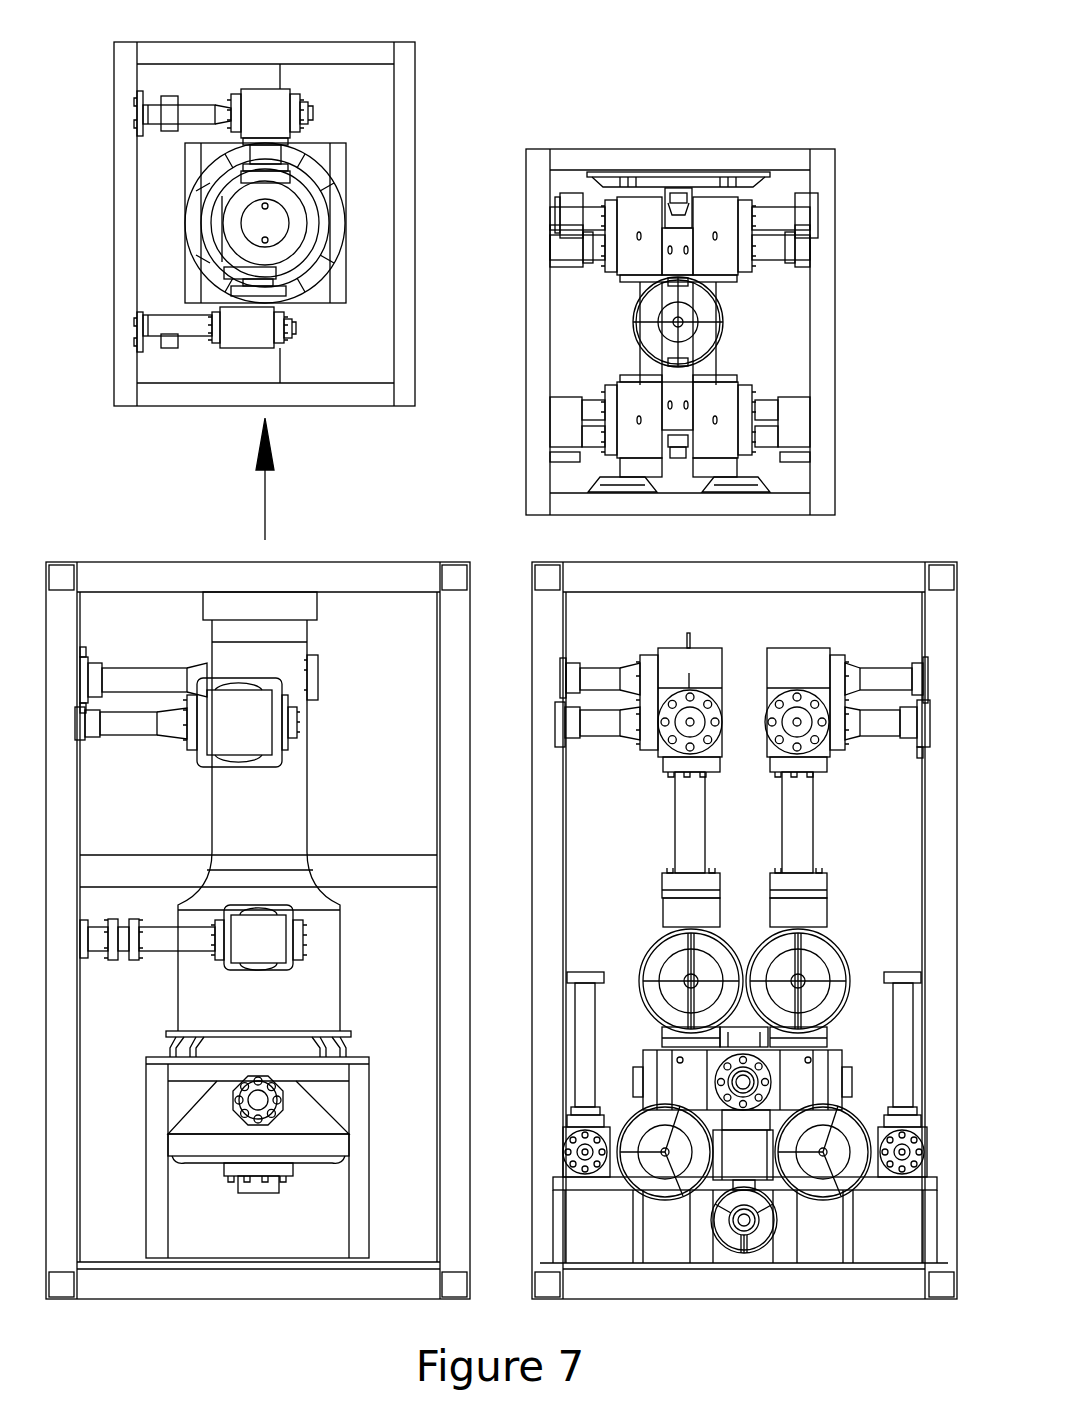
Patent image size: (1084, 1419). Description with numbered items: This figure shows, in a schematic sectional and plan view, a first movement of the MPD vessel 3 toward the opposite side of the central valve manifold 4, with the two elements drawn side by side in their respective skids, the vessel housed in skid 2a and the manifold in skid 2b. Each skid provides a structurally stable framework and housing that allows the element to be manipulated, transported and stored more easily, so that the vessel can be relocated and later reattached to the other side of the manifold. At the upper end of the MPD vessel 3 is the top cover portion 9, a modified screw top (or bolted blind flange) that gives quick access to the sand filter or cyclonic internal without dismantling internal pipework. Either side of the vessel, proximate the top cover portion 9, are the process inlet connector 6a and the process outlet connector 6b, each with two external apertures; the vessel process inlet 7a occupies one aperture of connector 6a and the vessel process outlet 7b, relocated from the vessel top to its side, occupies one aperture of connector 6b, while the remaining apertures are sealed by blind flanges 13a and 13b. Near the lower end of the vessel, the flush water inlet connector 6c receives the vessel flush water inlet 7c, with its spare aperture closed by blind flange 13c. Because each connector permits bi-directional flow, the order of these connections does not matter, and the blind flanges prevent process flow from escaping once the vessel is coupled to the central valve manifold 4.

The skid 2a is at (182, 1301).
The skid 2b is at (742, 1300).
The MPD vessel 3 is at (282, 803).
The central valve manifold 4 is at (697, 318).
The process inlet connector 6a is at (243, 334).
The process outlet connector 6b is at (265, 107).
The flush water inlet connector 6c is at (250, 949).
The vessel process inlet 7a is at (166, 322).
The vessel process outlet 7b is at (189, 111).
The vessel flush water inlet 7c is at (162, 918).
The top cover portion 9 is at (258, 222).
The blind flange 13a is at (295, 333).
The blind flange 13b is at (305, 110).
The blind flange 13c is at (299, 941).